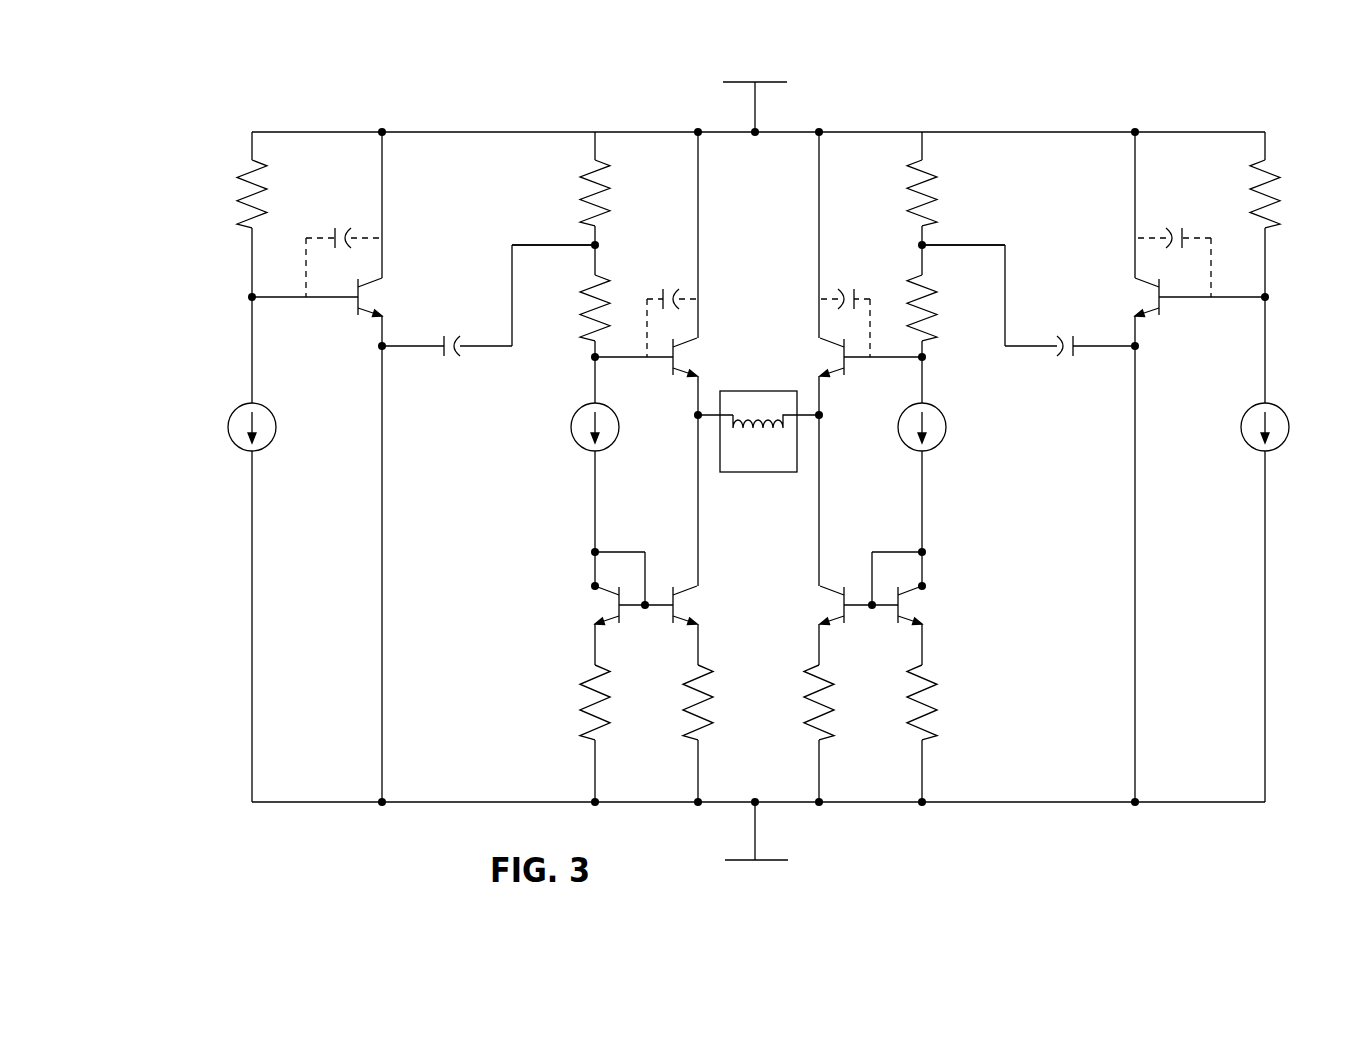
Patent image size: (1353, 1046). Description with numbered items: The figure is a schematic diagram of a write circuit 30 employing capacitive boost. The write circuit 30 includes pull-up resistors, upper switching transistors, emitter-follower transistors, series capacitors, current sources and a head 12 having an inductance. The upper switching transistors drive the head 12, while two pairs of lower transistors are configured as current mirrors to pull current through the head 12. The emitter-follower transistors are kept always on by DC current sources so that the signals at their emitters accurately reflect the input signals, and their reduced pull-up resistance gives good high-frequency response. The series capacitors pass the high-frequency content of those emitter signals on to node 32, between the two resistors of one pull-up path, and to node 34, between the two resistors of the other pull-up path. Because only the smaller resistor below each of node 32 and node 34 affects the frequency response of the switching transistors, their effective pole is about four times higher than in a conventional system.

The write circuit 30 is at (1036, 96).
The node 32 is at (598, 245).
The node 34 is at (919, 245).
The head 12 is at (757, 472).